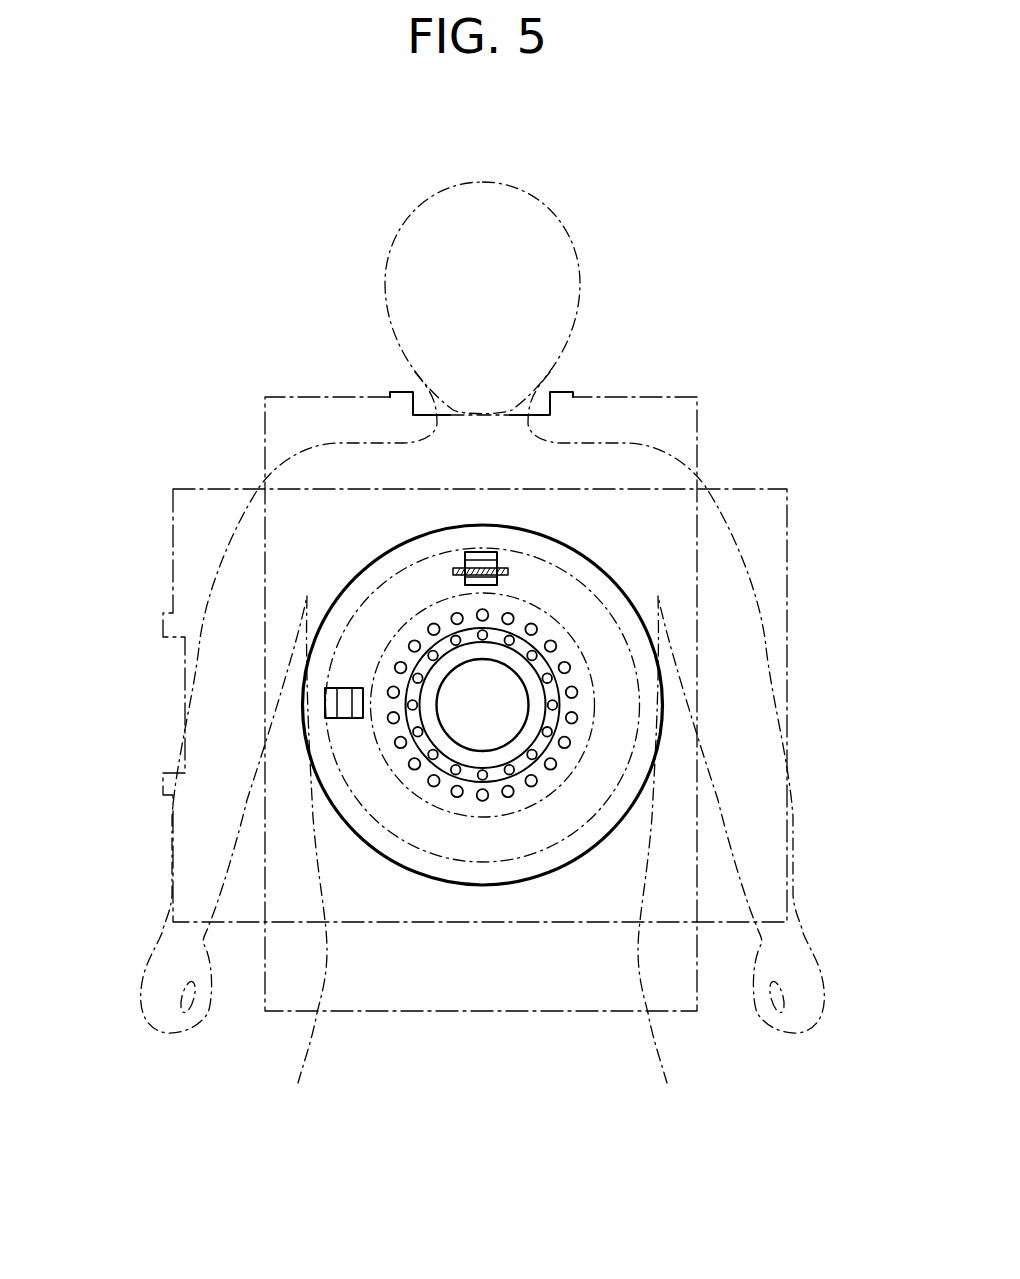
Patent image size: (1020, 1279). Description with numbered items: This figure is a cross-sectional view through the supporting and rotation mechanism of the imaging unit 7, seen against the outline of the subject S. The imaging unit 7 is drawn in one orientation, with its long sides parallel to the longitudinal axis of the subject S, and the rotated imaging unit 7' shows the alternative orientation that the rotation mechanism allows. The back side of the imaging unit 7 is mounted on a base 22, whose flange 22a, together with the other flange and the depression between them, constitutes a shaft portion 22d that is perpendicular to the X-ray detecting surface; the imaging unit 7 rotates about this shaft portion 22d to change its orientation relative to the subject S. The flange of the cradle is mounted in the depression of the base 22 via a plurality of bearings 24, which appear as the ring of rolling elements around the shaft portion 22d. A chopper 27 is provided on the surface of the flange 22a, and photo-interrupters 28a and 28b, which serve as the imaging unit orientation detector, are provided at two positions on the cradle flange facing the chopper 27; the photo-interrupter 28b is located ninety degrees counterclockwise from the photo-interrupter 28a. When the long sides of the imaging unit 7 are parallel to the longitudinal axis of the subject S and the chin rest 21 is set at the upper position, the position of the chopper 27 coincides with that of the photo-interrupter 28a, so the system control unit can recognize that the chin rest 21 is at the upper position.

The subject S is at (442, 262).
The imaging unit 7 is at (437, 674).
The imaging unit (rotated orientation) 7' is at (460, 670).
The chin rest 21 is at (533, 413).
The base 22 is at (650, 670).
The flange 22a is at (538, 867).
The shaft portion 22d is at (452, 753).
The bearings 24 is at (570, 742).
The chopper 27 is at (455, 568).
The photo-interrupter 28a is at (490, 553).
The photo-interrupter 28b is at (333, 697).